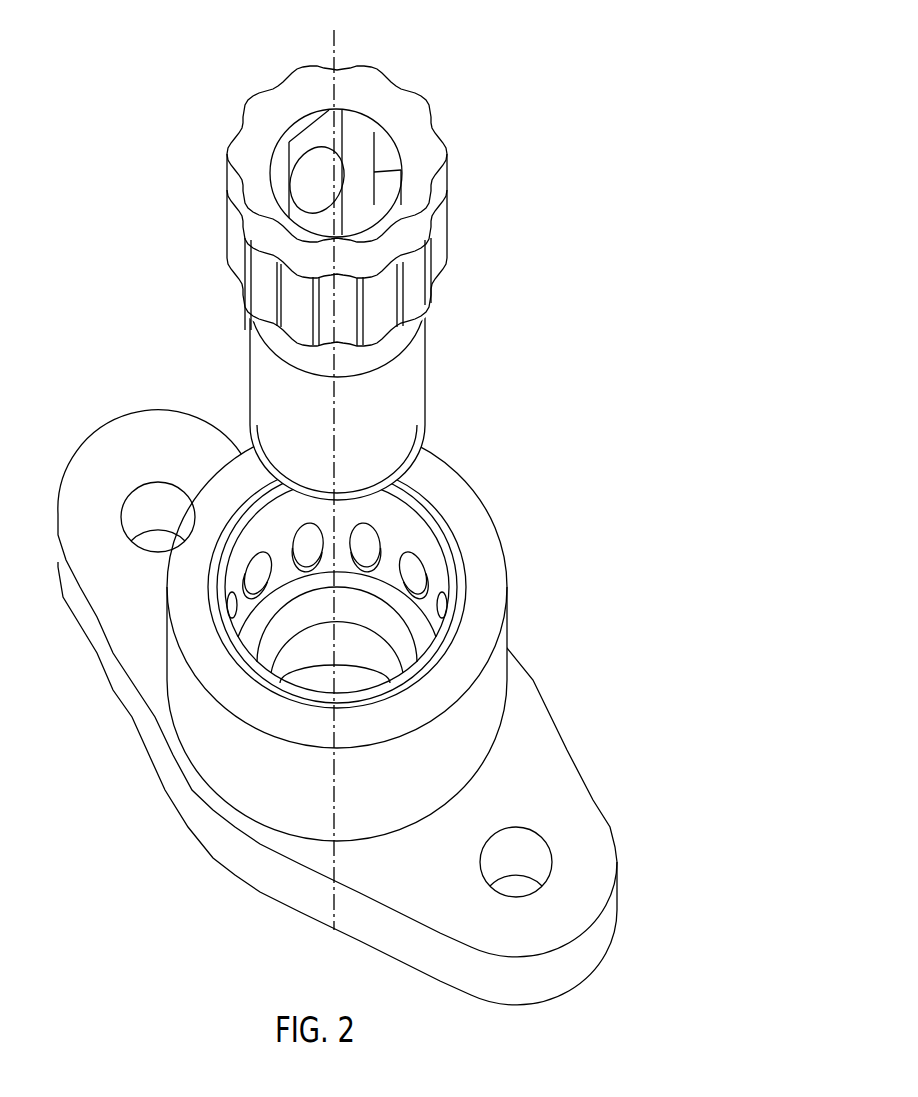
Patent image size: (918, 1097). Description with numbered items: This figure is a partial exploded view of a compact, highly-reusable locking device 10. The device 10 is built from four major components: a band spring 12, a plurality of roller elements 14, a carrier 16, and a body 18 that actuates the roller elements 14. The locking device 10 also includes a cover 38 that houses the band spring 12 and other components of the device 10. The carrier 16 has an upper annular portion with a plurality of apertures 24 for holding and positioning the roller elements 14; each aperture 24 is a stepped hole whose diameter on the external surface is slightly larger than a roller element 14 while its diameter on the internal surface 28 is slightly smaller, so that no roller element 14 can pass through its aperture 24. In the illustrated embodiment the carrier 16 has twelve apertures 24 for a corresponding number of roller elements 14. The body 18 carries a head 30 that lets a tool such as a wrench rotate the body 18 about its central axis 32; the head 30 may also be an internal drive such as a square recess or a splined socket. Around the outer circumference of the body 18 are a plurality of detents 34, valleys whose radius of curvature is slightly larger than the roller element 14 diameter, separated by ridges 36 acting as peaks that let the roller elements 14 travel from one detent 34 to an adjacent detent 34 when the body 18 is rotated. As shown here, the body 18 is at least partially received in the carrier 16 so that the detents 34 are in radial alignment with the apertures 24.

The locking device 10 is at (337, 513).
The band spring 12 is at (443, 513).
The roller elements 14 is at (373, 547).
The carrier 16 is at (433, 560).
The body 18 is at (430, 360).
The apertures 24 is at (252, 562).
The internal surface 28 is at (278, 533).
The head 30 is at (380, 191).
The central axis 32 is at (335, 50).
The detents 34 is at (417, 268).
The ridges 36 is at (252, 283).
The cover 38 is at (512, 562).